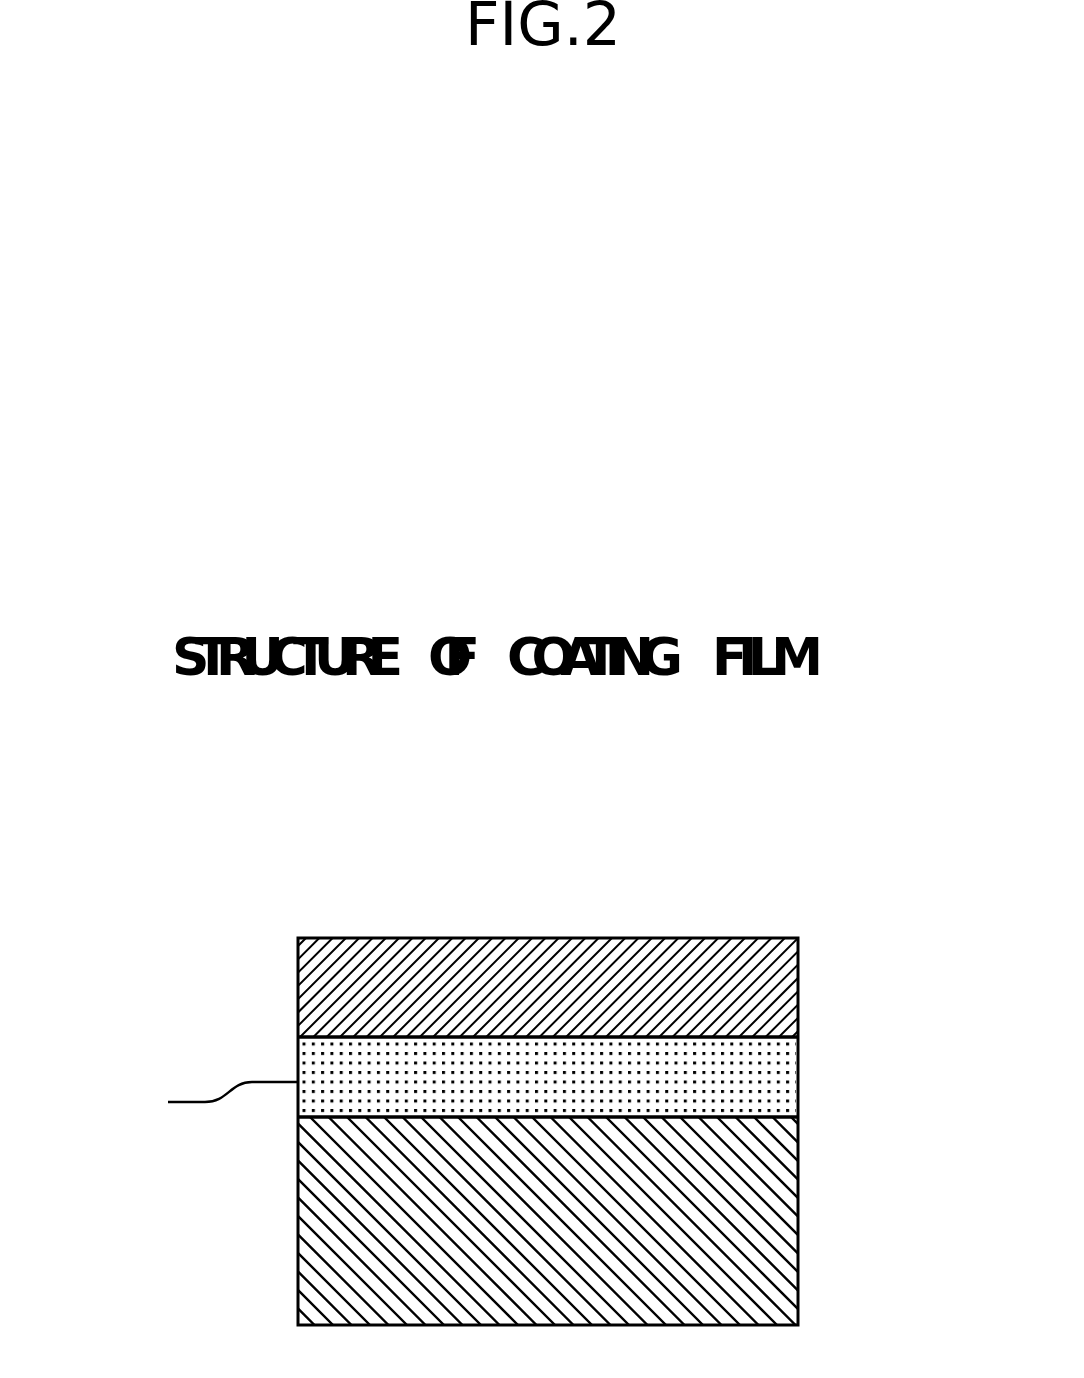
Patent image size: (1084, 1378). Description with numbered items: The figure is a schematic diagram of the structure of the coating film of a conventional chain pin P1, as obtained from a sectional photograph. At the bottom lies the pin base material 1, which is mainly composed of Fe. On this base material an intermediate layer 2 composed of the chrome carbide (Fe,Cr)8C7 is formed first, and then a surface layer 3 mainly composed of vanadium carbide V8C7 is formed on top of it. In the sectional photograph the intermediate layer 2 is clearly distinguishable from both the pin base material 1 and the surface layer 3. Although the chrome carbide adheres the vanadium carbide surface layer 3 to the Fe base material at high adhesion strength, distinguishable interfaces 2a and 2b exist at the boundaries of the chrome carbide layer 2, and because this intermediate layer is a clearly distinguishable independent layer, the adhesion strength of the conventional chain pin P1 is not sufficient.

The pin base material 1 is at (785, 1226).
The intermediate layer 2 is at (783, 1082).
The interface 2a is at (298, 1037).
The interface 2b is at (298, 1117).
The surface layer 3 is at (783, 997).
The conventional chain pin P1 is at (776, 893).